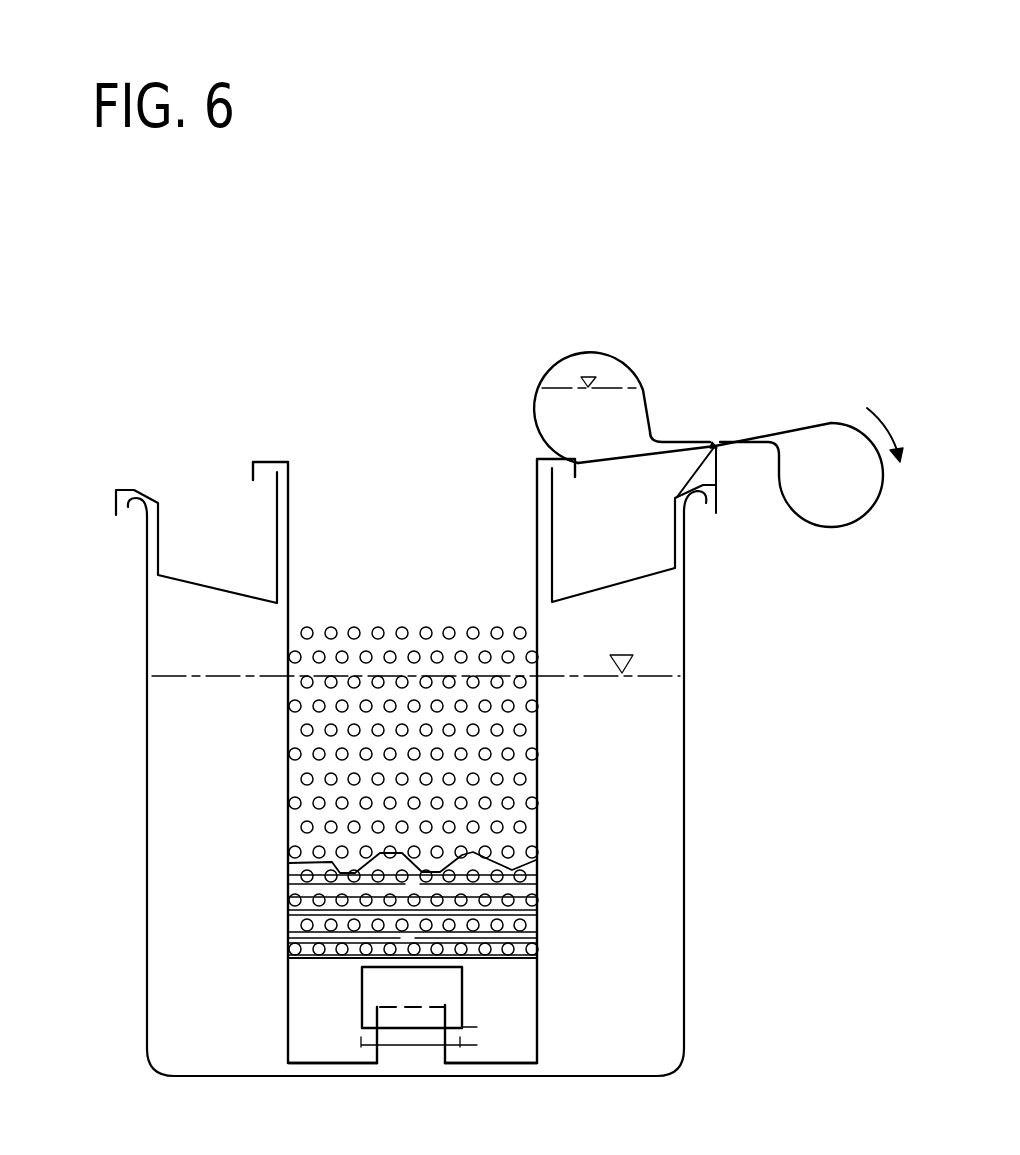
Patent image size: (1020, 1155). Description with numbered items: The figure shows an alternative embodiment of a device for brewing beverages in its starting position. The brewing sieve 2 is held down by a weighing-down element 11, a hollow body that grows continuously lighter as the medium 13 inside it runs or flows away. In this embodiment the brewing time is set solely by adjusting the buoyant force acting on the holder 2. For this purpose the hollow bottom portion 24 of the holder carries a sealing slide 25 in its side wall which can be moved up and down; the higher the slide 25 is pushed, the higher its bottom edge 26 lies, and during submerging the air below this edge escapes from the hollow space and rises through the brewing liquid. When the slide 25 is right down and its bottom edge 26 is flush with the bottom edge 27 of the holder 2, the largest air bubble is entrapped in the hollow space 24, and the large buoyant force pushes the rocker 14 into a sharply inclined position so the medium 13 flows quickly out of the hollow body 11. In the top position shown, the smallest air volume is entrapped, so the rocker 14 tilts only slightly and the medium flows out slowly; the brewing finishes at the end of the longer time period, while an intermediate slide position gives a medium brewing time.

The brewing sieve 2 is at (286, 793).
The weighing-down element 11 is at (620, 357).
The medium 13 is at (630, 417).
The rocker 14 is at (733, 407).
The hollow bottom portion 24 is at (318, 1050).
The sealing slide 25 is at (430, 983).
The bottom edge of the slide 26 is at (392, 1030).
The bottom edge of the holder 27 is at (520, 1063).